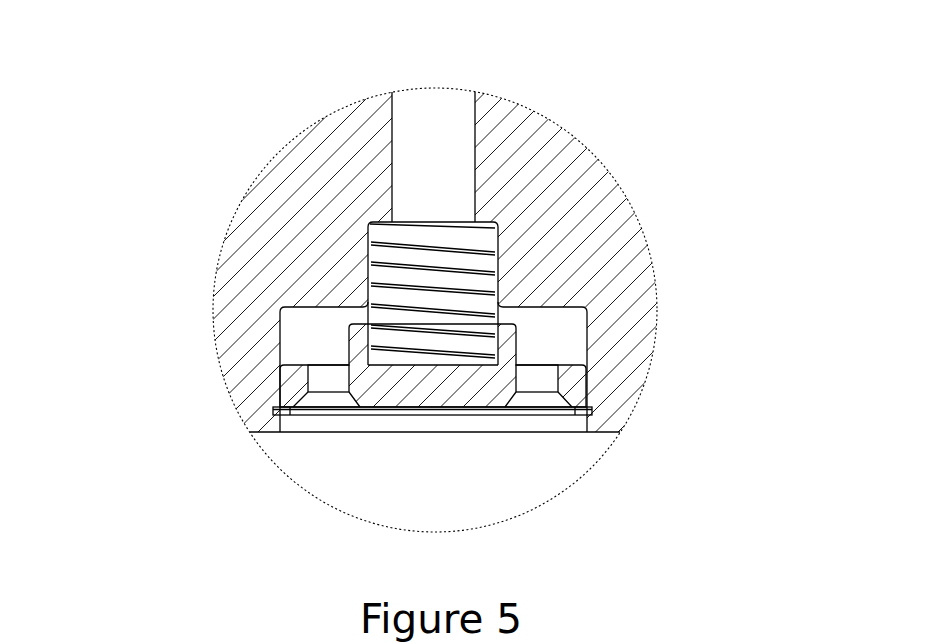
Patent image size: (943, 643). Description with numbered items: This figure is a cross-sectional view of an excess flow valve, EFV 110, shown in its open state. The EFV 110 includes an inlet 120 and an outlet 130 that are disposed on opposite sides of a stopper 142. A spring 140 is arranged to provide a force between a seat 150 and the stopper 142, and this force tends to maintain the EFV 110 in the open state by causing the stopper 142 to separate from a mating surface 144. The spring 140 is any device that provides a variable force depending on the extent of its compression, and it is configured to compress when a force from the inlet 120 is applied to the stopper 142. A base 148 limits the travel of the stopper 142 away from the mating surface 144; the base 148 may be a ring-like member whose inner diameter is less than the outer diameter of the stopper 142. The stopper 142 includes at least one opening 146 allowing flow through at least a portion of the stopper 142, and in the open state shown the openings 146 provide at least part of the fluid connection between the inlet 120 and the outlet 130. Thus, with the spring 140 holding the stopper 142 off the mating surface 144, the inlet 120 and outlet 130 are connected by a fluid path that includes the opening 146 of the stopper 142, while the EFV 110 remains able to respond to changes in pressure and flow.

The excess flow valve (EFV) 110 is at (268, 106).
The inlet 120 is at (440, 422).
The outlet 130 is at (420, 172).
The spring 140 is at (498, 232).
The stopper 142 is at (507, 350).
The mating surface 144 is at (317, 308).
The opening 146 is at (323, 370).
The base 148 is at (542, 410).
The seat 150 is at (480, 222).